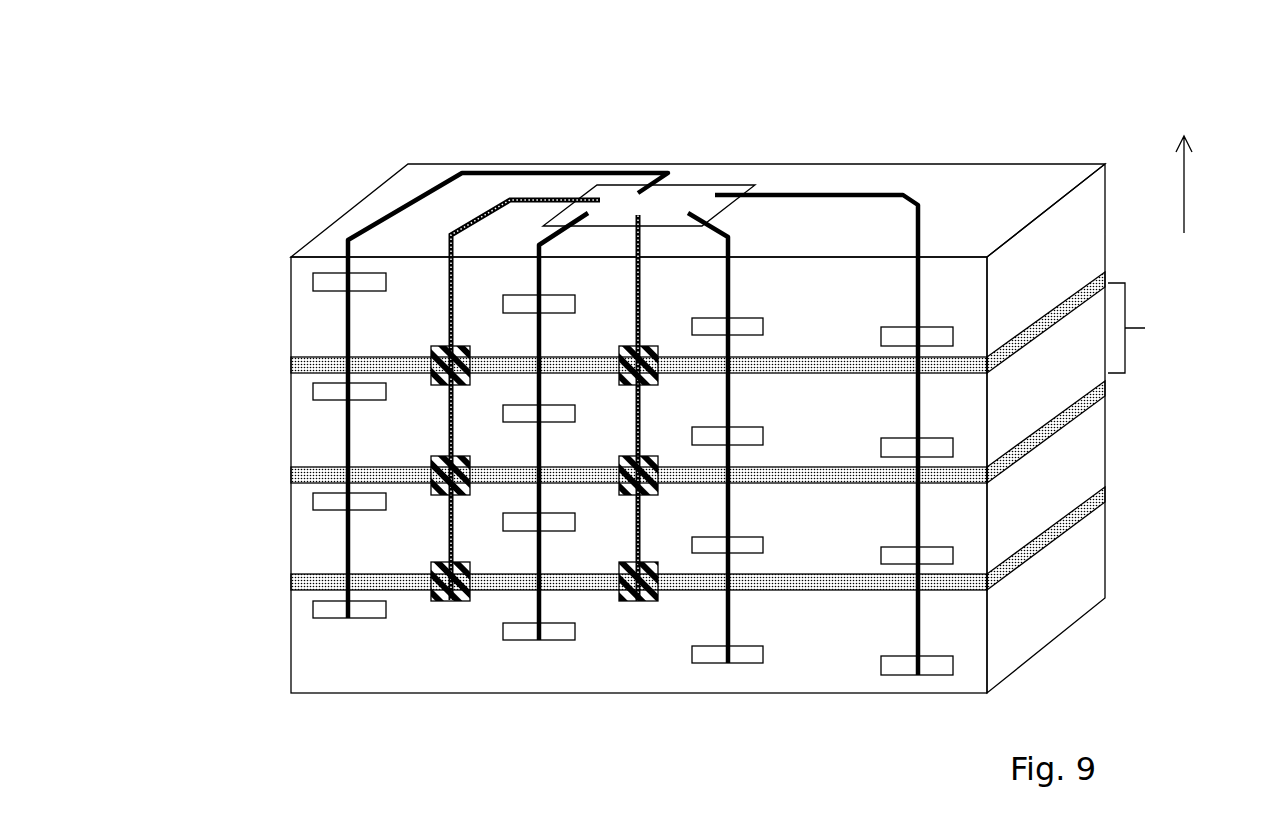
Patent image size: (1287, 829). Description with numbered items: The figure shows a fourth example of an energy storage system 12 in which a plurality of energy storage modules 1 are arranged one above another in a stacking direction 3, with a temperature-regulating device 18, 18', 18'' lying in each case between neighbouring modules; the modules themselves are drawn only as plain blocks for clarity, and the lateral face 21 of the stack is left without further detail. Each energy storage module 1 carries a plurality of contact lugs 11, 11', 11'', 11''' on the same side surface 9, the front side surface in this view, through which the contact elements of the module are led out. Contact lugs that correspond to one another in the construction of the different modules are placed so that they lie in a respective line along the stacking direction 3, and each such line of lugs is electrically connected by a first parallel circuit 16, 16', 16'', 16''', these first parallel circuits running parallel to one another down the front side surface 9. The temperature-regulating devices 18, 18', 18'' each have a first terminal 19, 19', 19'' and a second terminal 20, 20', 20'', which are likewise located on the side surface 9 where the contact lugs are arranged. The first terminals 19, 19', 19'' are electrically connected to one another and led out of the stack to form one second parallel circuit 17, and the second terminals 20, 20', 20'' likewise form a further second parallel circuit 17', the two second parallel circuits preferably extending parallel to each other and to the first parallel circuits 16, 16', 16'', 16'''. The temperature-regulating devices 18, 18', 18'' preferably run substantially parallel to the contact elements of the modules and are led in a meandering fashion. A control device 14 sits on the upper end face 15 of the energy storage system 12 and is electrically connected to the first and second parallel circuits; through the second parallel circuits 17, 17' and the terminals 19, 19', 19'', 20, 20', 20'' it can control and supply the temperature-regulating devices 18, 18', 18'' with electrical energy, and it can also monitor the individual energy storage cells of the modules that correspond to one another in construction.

The energy storage module 1 is at (1139, 328).
The stacking direction 3 is at (1172, 184).
The side surface 9 is at (836, 532).
The contact lug 11 is at (266, 626).
The contact lug 11' is at (266, 519).
The contact lug 11'' is at (266, 410).
The contact lug 11''' is at (266, 269).
The energy storage system 12 is at (698, 362).
The control device 14 is at (682, 198).
The upper end face 15 is at (1004, 205).
The first parallel circuit 16 is at (407, 395).
The first parallel circuit 16' is at (502, 481).
The first parallel circuit 16'' is at (783, 481).
The first parallel circuit 16''' is at (936, 435).
The second parallel circuit 17 is at (497, 400).
The second parallel circuit 17' is at (675, 408).
The temperature-regulating device 18 is at (768, 526).
The temperature-regulating device 18' is at (771, 423).
The temperature-regulating device 18'' is at (774, 309).
The first terminal 19 is at (402, 656).
The first terminal 19' is at (431, 502).
The first terminal 19'' is at (430, 391).
The second terminal 20 is at (638, 656).
The second terminal 20' is at (666, 491).
The second terminal 20'' is at (669, 381).
The side surface 21 is at (1064, 483).